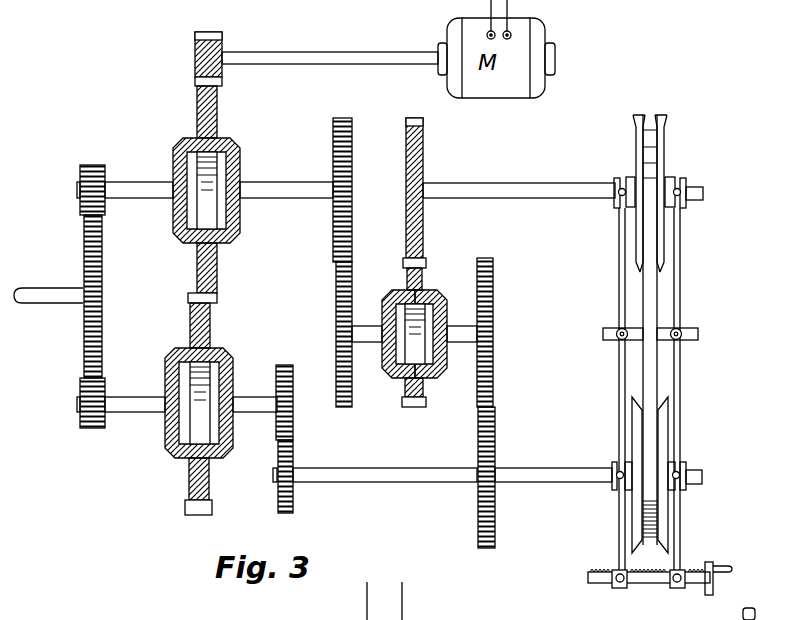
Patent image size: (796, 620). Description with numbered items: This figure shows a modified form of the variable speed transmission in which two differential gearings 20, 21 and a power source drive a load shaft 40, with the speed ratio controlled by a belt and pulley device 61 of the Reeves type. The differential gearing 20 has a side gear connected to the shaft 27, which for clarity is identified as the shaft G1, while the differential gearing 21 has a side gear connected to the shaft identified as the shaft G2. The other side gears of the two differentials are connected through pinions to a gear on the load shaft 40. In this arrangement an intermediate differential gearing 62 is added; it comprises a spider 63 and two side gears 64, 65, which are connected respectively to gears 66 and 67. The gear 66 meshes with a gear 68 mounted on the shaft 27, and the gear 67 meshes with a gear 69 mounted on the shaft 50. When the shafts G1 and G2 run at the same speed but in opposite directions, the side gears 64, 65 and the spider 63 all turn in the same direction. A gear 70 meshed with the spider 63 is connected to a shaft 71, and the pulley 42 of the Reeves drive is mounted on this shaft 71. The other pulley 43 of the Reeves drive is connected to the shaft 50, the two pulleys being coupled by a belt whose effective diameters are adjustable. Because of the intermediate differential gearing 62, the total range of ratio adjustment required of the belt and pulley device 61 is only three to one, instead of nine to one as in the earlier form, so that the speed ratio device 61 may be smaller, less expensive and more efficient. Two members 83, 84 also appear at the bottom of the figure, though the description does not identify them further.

The differential gearing 20 is at (155, 224).
The differential gearing 21 is at (158, 379).
The shaft 27 is at (280, 194).
The load shaft 40 is at (38, 297).
The pulley 42 is at (666, 162).
The pulley 43 is at (660, 442).
The shaft 50 is at (442, 463).
The belt and pulley device 61 is at (700, 376).
The intermediate differential gearing 62 is at (414, 357).
The spider 63 is at (426, 272).
The side gear 64 is at (385, 314).
The side gear 65 is at (455, 309).
The gear 66 is at (336, 286).
The gear 67 is at (493, 290).
The gear 68 is at (336, 245).
The gear 69 is at (495, 430).
The gear 70 is at (423, 222).
The shaft 71 is at (527, 190).
The lead 83 is at (368, 590).
The lead 84 is at (403, 593).
The shaft G1 is at (264, 187).
The shaft G2 is at (252, 398).